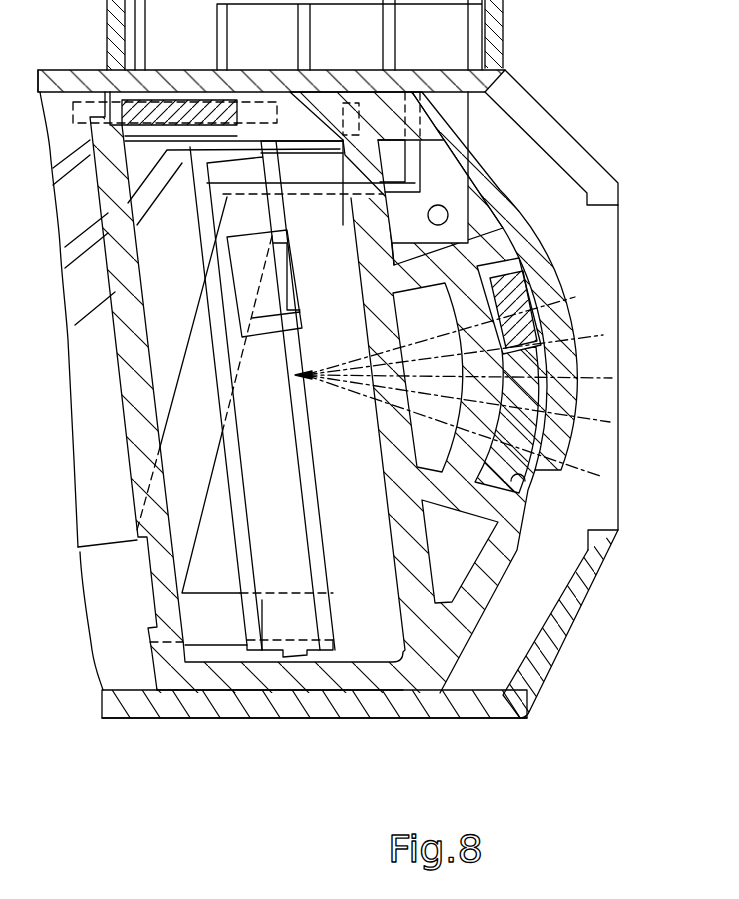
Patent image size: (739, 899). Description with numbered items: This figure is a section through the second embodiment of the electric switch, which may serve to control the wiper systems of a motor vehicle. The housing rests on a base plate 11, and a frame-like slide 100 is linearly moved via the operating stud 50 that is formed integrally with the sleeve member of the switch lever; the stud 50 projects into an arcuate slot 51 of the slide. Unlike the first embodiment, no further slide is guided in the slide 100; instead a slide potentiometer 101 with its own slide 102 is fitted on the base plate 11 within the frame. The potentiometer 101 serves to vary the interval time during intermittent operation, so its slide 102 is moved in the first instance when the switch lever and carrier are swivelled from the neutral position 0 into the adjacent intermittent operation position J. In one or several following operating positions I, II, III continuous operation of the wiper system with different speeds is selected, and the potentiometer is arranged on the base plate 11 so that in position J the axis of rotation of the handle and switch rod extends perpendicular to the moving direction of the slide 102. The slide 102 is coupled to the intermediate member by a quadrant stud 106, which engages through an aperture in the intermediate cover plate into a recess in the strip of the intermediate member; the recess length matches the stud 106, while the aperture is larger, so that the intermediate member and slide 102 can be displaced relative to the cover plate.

The operating stud 50 is at (527, 287).
The neutral position 0 is at (575, 297).
The intermittent operation position J is at (603, 335).
The operating position I is at (612, 378).
The operating position II is at (610, 422).
The operating position III is at (603, 477).
The arcuate slot 51 is at (513, 467).
The quadrant stud 106 is at (287, 280).
The slide of the slide potentiometer 102 is at (270, 323).
The slide potentiometer 101 is at (287, 530).
The slide 100 is at (355, 678).
The base plate 11 is at (458, 712).